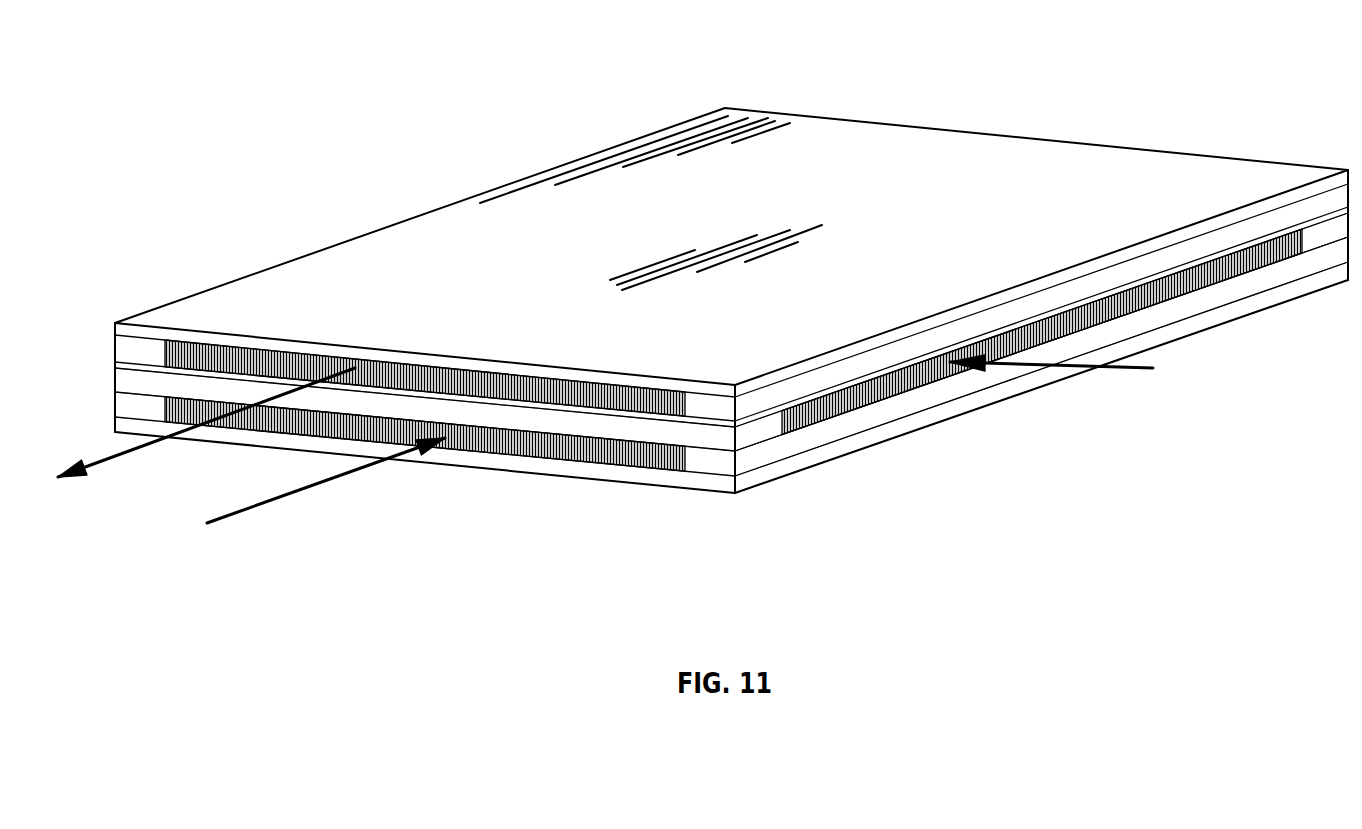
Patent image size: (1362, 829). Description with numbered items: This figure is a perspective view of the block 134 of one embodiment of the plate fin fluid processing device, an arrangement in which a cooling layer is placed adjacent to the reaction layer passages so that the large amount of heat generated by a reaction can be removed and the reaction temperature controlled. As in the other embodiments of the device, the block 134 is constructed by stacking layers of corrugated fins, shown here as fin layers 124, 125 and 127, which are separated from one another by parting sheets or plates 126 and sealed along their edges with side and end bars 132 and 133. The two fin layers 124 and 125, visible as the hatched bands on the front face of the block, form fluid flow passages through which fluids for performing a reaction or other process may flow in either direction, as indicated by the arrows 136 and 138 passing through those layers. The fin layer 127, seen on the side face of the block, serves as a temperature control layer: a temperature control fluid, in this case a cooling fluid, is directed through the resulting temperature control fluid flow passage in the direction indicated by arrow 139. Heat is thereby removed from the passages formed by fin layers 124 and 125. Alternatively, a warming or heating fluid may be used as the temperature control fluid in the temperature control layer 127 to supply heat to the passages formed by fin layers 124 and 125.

The block 134 is at (175, 108).
The corrugated fin layer 125 is at (232, 347).
The corrugated fin layer 124 is at (600, 453).
The temperature control fin layer 127 is at (897, 387).
The end bar 133 is at (698, 433).
The parting sheet 126 is at (748, 448).
The side bar 132 is at (850, 427).
The fluid flow arrow 136 is at (120, 458).
The fluid flow arrow 138 is at (303, 492).
The temperature control fluid flow arrow 139 is at (1127, 370).